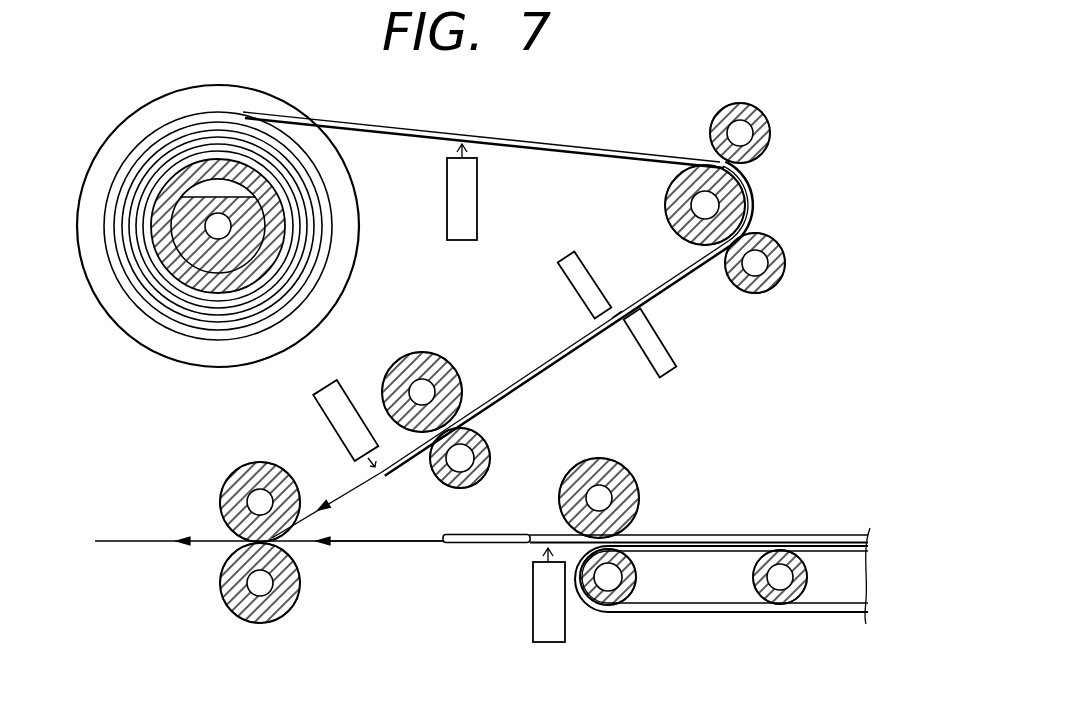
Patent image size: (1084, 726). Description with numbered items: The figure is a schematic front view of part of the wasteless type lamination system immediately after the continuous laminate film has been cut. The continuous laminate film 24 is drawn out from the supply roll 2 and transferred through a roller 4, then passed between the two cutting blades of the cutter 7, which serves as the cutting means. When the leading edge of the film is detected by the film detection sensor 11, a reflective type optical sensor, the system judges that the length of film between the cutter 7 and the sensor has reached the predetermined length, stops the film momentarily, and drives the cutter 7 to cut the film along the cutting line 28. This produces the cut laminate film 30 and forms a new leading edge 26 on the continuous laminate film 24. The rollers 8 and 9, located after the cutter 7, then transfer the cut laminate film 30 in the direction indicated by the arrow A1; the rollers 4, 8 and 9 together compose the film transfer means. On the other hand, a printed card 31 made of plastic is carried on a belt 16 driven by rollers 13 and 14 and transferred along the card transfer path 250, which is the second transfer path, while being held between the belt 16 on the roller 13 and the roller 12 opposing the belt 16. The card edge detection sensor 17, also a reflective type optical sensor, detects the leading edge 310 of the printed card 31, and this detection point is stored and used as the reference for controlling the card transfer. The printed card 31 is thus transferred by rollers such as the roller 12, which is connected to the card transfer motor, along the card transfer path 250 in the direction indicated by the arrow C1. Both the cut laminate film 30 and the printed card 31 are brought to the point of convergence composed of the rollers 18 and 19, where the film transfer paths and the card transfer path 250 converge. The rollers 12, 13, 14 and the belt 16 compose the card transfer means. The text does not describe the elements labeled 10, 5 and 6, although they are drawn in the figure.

The supply roll 2 is at (167, 127).
The continuous laminate film 24 is at (613, 146).
The sensor 10 is at (447, 197).
The pinch roller 5 is at (746, 103).
The roller 4 is at (667, 193).
The pinch roller 6 is at (772, 288).
The cut laminate film 30 is at (546, 355).
The new leading edge 26 is at (618, 308).
The cutting line 28 is at (617, 320).
The cutter 7 is at (672, 366).
The roller 8 is at (461, 378).
The roller 9 is at (488, 446).
The film detection sensor 11 is at (322, 407).
The arrow A1 is at (347, 494).
The roller 18 is at (240, 467).
The roller 19 is at (274, 621).
The arrow C1 is at (358, 544).
The card transfer path 250 is at (408, 544).
The leading edge 310 is at (442, 536).
The printed card 31 is at (733, 534).
The roller 12 is at (628, 470).
The belt 16 is at (704, 613).
The roller 13 is at (611, 606).
The roller 14 is at (787, 605).
The card edge detection sensor 17 is at (552, 643).